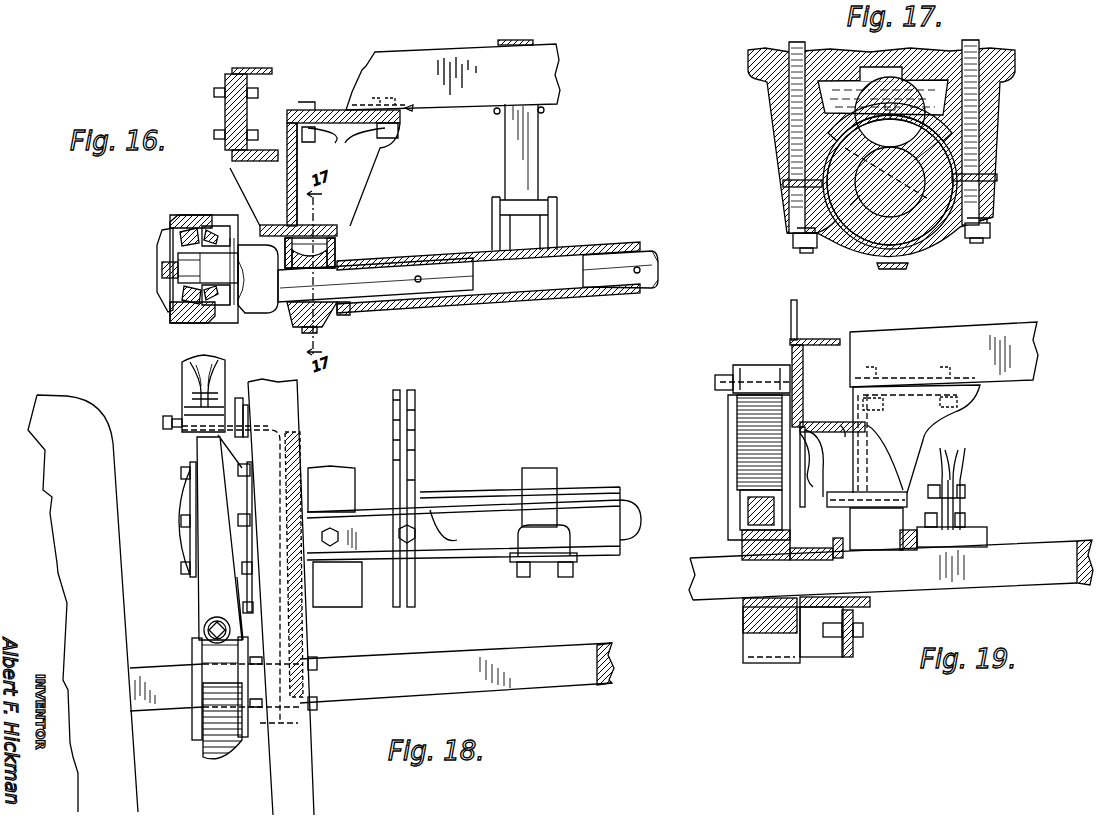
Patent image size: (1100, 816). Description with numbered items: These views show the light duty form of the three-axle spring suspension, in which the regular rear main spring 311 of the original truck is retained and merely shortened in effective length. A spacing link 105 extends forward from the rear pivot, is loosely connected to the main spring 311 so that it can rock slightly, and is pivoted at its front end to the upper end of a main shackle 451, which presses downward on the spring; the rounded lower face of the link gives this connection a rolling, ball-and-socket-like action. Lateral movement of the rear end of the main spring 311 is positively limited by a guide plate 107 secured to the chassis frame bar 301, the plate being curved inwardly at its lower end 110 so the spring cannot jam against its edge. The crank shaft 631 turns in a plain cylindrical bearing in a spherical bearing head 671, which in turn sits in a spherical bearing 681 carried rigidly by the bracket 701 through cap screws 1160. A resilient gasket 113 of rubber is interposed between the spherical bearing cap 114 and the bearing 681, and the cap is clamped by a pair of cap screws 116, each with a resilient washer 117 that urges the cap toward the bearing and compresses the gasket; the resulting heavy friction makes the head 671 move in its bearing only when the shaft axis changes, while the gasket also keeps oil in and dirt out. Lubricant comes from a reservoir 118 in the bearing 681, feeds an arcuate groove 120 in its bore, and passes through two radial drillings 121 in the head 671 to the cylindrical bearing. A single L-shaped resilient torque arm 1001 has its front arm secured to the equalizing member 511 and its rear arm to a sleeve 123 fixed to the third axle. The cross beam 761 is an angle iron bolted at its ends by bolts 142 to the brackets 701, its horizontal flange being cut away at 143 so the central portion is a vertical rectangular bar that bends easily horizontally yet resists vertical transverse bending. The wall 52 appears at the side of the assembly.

In FIG. 18, the wall 52 is at (60, 395).
In FIG. 18, the spacing link 105 is at (183, 397).
In FIG. 18, the guide plate 107 is at (163, 422).
In FIG. 19, the guide plate 107 is at (790, 311).
In FIG. 19, the inwardly curved lower end 110 is at (820, 463).
In FIG. 17, the resilient gasket 113 is at (783, 186).
In FIG. 16, the spherical bearing cap 114 is at (307, 335).
In FIG. 17, the spherical bearing cap 114 is at (890, 270).
In FIG. 17, the cap screws 116 is at (805, 253).
In FIG. 17, the resilient washer 117 is at (793, 240).
In FIG. 16, the reservoir 118 is at (336, 240).
In FIG. 17, the reservoir 118 is at (835, 95).
In FIG. 17, the arcuate groove 120 is at (952, 125).
In FIG. 16, the radial drillings 121 is at (310, 270).
In FIG. 17, the radial drillings 121 is at (958, 142).
In FIG. 19, the sleeve 123 is at (846, 660).
In FIG. 16, the bolts 142 is at (346, 144).
In FIG. 18, the bolts 142 is at (417, 545).
In FIG. 19, the bolts 142 is at (866, 377).
In FIG. 16, the cut-away portion 143 is at (413, 112).
In FIG. 18, the cut-away portion 143 is at (463, 538).
In FIG. 19, the cut-away portion 143 is at (980, 386).
In FIG. 16, the chassis frame bar 301 is at (247, 67).
In FIG. 18, the chassis frame bar 301 is at (274, 798).
In FIG. 19, the chassis frame bar 301 is at (820, 338).
In FIG. 18, the main spring 311 is at (182, 366).
In FIG. 19, the main spring 311 is at (737, 445).
In FIG. 19, the main shackle 451 is at (728, 430).
In FIG. 16, the equalizing member 511 is at (186, 214).
In FIG. 18, the equalizing member 511 is at (207, 592).
In FIG. 19, the equalizing member 511 is at (740, 503).
In FIG. 16, the crank shaft 631 is at (583, 263).
In FIG. 17, the crank shaft 631 is at (870, 210).
In FIG. 18, the crank shaft 631 is at (622, 498).
In FIG. 16, the spherical bearing head 671 is at (340, 317).
In FIG. 17, the spherical bearing head 671 is at (918, 242).
In FIG. 19, the spherical bearing head 671 is at (905, 560).
In FIG. 16, the spherical bearing 681 is at (285, 246).
In FIG. 17, the spherical bearing 681 is at (955, 160).
In FIG. 16, the bracket 701 is at (398, 135).
In FIG. 17, the bracket 701 is at (748, 60).
In FIG. 18, the bracket 701 is at (345, 556).
In FIG. 19, the bracket 701 is at (947, 413).
In FIG. 16, the cross beam 761 is at (566, 50).
In FIG. 18, the cross beam 761 is at (488, 562).
In FIG. 19, the cross beam 761 is at (1022, 322).
In FIG. 18, the L shaped resilient torque arm 1001 is at (284, 430).
In FIG. 17, the cap screws 1160 is at (789, 46).